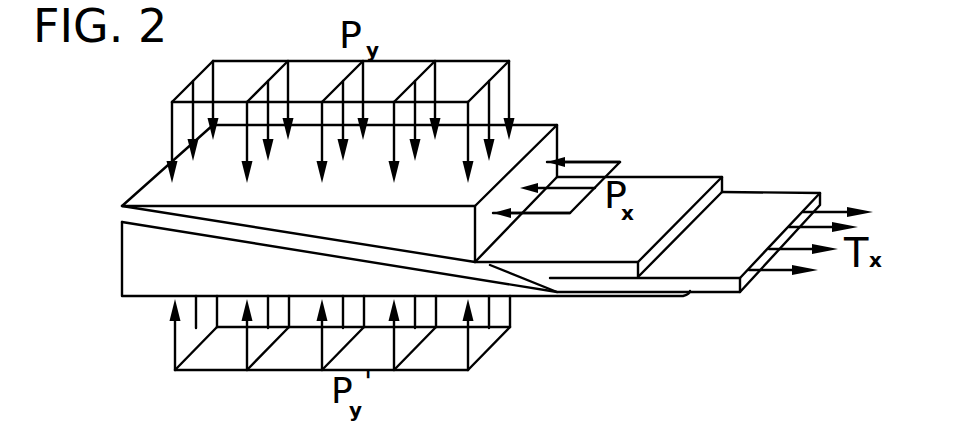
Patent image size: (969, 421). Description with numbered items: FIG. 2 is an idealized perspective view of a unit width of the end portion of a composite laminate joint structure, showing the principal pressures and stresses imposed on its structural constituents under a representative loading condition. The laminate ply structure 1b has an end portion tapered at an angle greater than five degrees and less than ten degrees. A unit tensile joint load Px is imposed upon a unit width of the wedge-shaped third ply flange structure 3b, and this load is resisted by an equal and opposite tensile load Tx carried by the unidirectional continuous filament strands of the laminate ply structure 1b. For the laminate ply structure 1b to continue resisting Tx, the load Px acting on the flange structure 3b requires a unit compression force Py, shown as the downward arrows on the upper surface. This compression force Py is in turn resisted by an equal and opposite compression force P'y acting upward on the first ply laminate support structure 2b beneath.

The laminate ply structure 1b is at (122, 206).
The first ply laminate support structure 2b is at (122, 279).
The third ply flange structure 3b is at (602, 133).